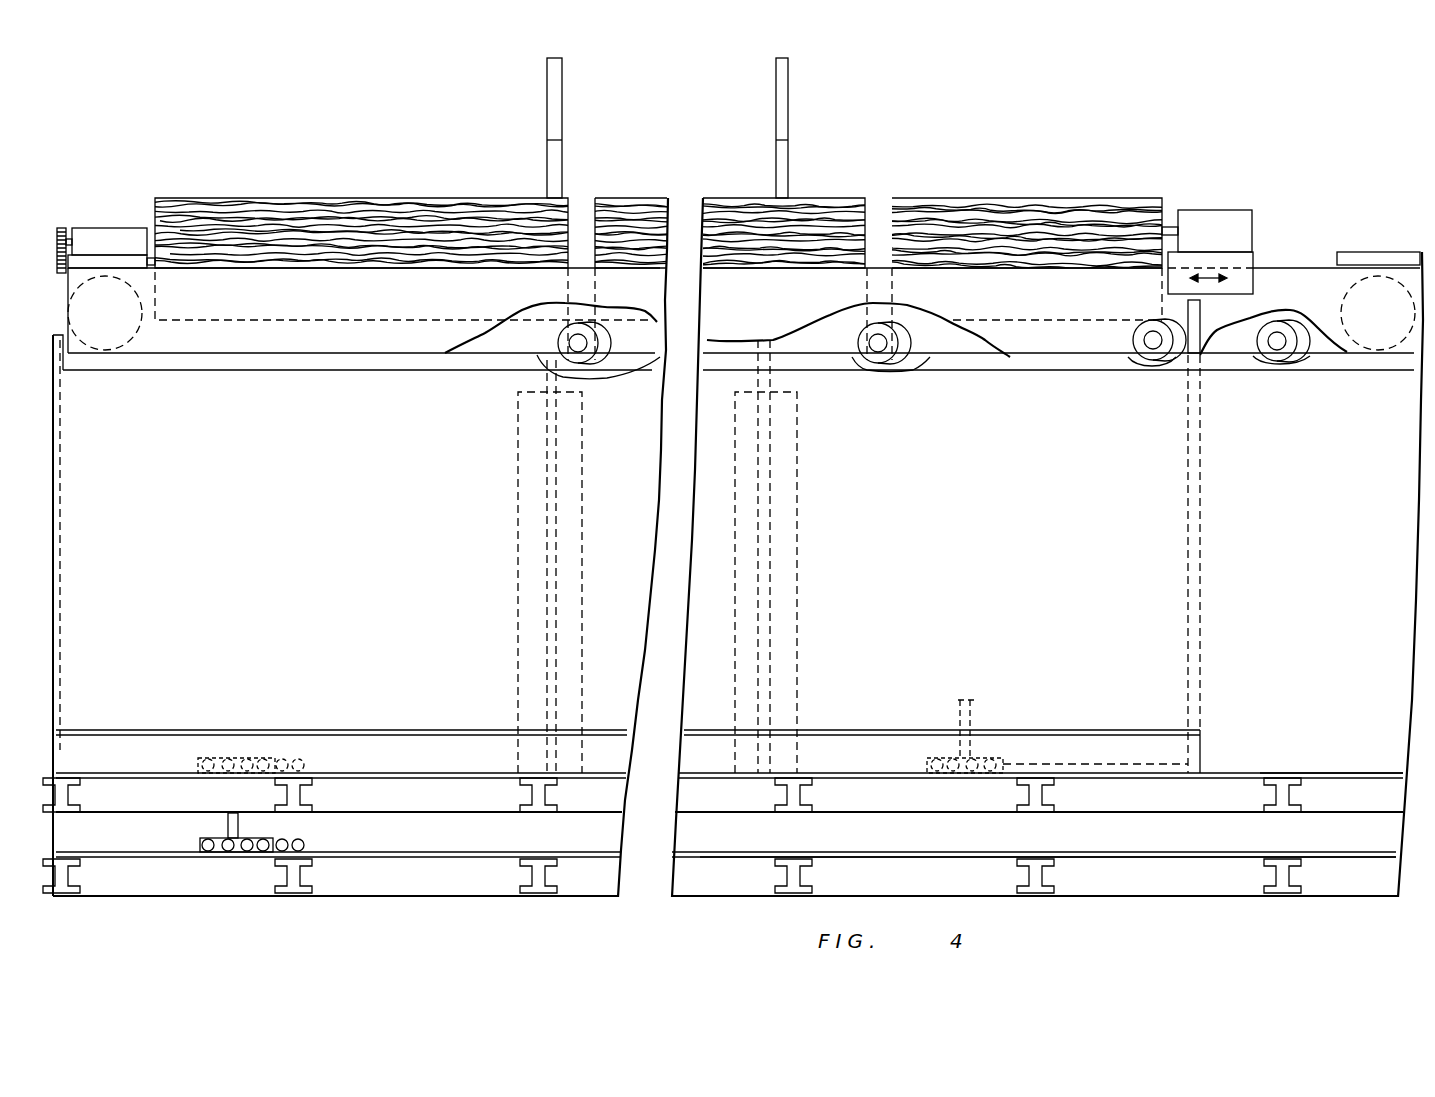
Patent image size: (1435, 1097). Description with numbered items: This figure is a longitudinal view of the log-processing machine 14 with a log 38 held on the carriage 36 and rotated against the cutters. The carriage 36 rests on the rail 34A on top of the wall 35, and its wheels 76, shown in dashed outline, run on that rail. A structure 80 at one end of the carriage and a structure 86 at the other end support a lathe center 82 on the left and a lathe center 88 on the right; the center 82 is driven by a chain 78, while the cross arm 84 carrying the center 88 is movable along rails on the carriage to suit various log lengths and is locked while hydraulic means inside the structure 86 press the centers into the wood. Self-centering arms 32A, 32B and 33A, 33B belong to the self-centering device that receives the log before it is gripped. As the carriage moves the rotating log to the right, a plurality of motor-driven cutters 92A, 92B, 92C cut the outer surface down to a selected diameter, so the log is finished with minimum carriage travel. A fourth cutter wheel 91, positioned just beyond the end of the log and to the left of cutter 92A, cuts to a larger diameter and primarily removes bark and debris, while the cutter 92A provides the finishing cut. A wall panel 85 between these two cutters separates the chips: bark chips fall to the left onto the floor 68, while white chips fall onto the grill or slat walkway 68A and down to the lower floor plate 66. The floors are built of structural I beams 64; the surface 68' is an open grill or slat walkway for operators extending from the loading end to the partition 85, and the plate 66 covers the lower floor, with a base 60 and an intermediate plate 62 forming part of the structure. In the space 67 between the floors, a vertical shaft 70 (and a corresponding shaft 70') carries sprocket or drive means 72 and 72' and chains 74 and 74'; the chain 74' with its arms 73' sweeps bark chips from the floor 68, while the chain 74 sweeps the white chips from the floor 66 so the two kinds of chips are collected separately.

The log sawing apparatus 14 is at (822, 176).
The self-centering arm 32A is at (565, 130).
The self-centering arm 32B is at (770, 120).
The self-centering arm 33A is at (545, 598).
The self-centering arm 33B is at (772, 527).
The rail 34A is at (1082, 358).
The wall 35 is at (1067, 537).
The carriage 36 is at (345, 345).
The log 38 is at (345, 197).
The base 60 is at (235, 898).
The intermediate plate 62 is at (432, 812).
The I beams 64 is at (76, 797).
The plate 66 is at (448, 852).
The space 67 is at (883, 845).
The plate 68 is at (729, 735).
The surface 68' is at (628, 723).
The surface 68A is at (1374, 776).
The vertical shaft 70 is at (191, 826).
The post 70' is at (992, 720).
The sprocket or drive means 72 is at (262, 832).
The sprocket or drive means 72' is at (984, 754).
The arms 73' is at (1095, 749).
The chain 74 is at (288, 836).
The chain 74' is at (251, 737).
The wheels 76 is at (137, 347).
The chain 78 is at (60, 226).
The structure 80 is at (105, 227).
The lathe center 82 is at (151, 256).
The cross arm 84 is at (1254, 285).
The wall panel 85 is at (1202, 492).
The structure 86 is at (1216, 222).
The lathe center 88 is at (1170, 226).
The cutter wheel 91 is at (1153, 358).
The cutter 92A is at (1278, 352).
The cutter 92B is at (878, 352).
The cutter 92C is at (580, 352).